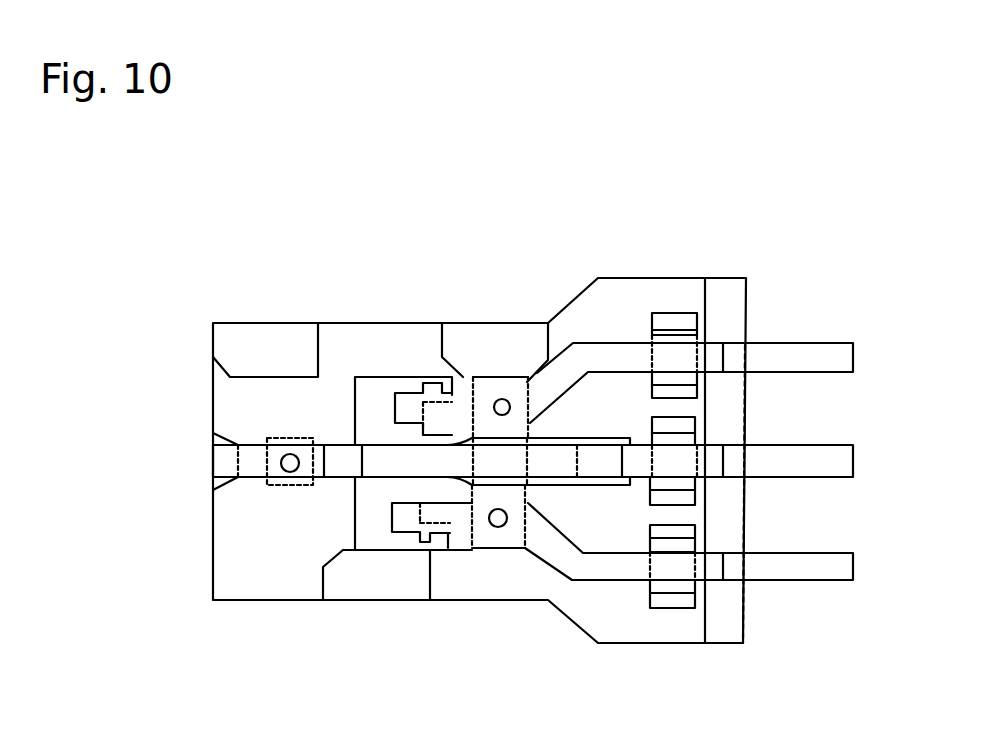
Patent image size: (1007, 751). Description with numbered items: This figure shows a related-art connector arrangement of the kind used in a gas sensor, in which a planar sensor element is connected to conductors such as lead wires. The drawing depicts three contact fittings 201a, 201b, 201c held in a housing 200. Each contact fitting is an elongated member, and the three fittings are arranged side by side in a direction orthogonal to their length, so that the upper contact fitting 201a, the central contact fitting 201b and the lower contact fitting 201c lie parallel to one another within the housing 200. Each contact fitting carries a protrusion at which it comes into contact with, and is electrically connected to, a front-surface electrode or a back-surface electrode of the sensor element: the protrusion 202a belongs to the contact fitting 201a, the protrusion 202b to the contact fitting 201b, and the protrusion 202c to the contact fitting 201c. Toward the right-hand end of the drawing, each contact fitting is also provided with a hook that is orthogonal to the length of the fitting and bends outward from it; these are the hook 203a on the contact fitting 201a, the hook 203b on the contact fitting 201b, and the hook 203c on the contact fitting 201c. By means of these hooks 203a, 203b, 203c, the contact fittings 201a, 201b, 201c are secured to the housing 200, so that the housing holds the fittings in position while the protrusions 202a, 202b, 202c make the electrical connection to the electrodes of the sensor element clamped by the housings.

The housing 200 is at (258, 565).
The contact fitting 201a is at (606, 362).
The contact fitting 201b is at (800, 463).
The contact fitting 201c is at (623, 565).
The protrusion 202a is at (503, 398).
The protrusion 202b is at (285, 470).
The protrusion 202c is at (497, 527).
The hook 203a is at (685, 378).
The hook 203b is at (705, 470).
The hook 203c is at (683, 587).